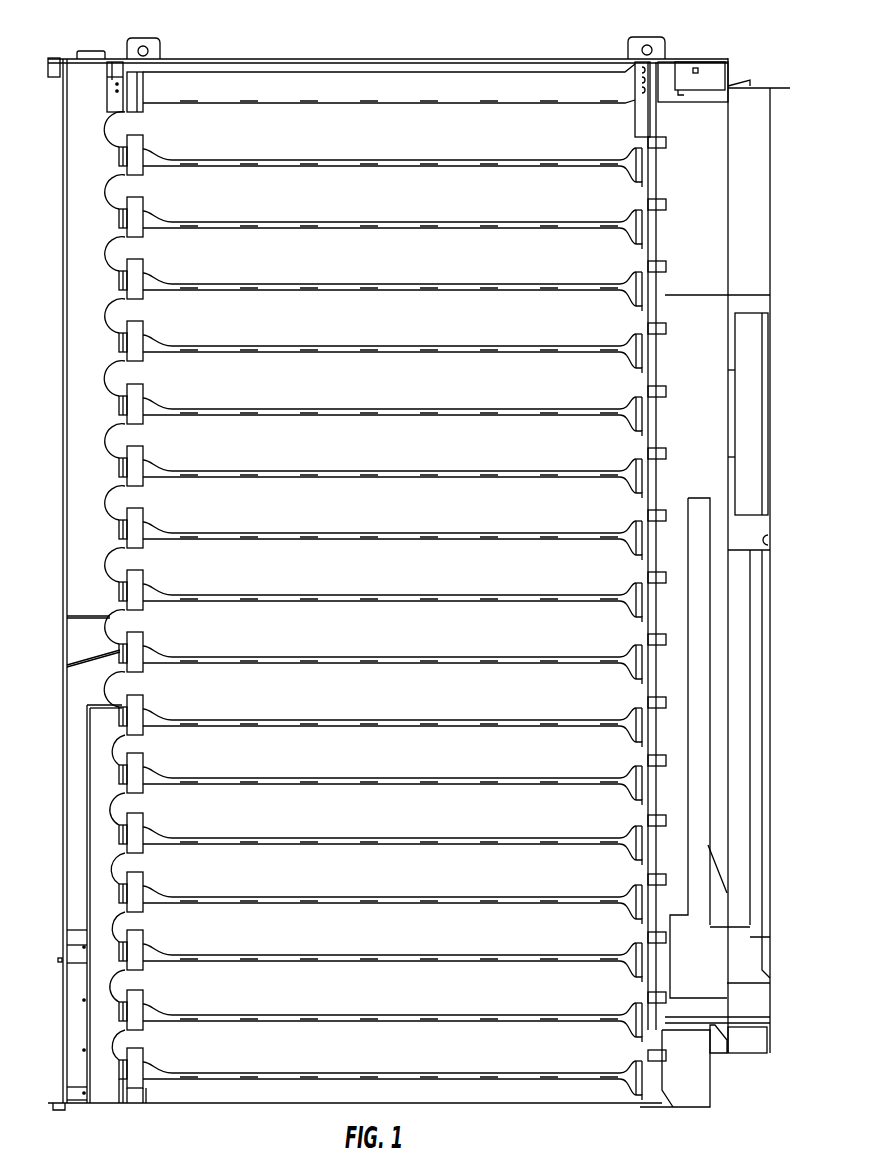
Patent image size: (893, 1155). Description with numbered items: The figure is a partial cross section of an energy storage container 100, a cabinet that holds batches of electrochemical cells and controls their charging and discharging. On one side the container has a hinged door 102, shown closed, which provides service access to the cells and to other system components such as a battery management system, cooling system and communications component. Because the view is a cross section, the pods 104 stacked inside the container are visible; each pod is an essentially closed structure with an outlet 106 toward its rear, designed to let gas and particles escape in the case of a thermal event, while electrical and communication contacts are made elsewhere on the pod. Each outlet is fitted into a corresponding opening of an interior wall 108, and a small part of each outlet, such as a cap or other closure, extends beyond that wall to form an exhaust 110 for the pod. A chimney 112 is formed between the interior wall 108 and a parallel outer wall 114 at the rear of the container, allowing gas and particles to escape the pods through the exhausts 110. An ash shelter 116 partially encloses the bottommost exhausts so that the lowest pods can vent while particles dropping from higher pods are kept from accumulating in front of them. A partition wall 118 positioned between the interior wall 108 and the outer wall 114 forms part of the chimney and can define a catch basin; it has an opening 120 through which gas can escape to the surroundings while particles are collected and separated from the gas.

The energy storage container 100 is at (232, 36).
The door 102 is at (772, 192).
The pods 104 is at (498, 100).
The outlet 106 is at (138, 108).
The interior wall 108 is at (133, 149).
The exhaust 110 is at (116, 440).
The chimney 112 is at (85, 380).
The outer wall 114 is at (62, 246).
The ash shelter 116 is at (49, 821).
The partition wall 118 is at (83, 178).
The opening 120 is at (108, 97).